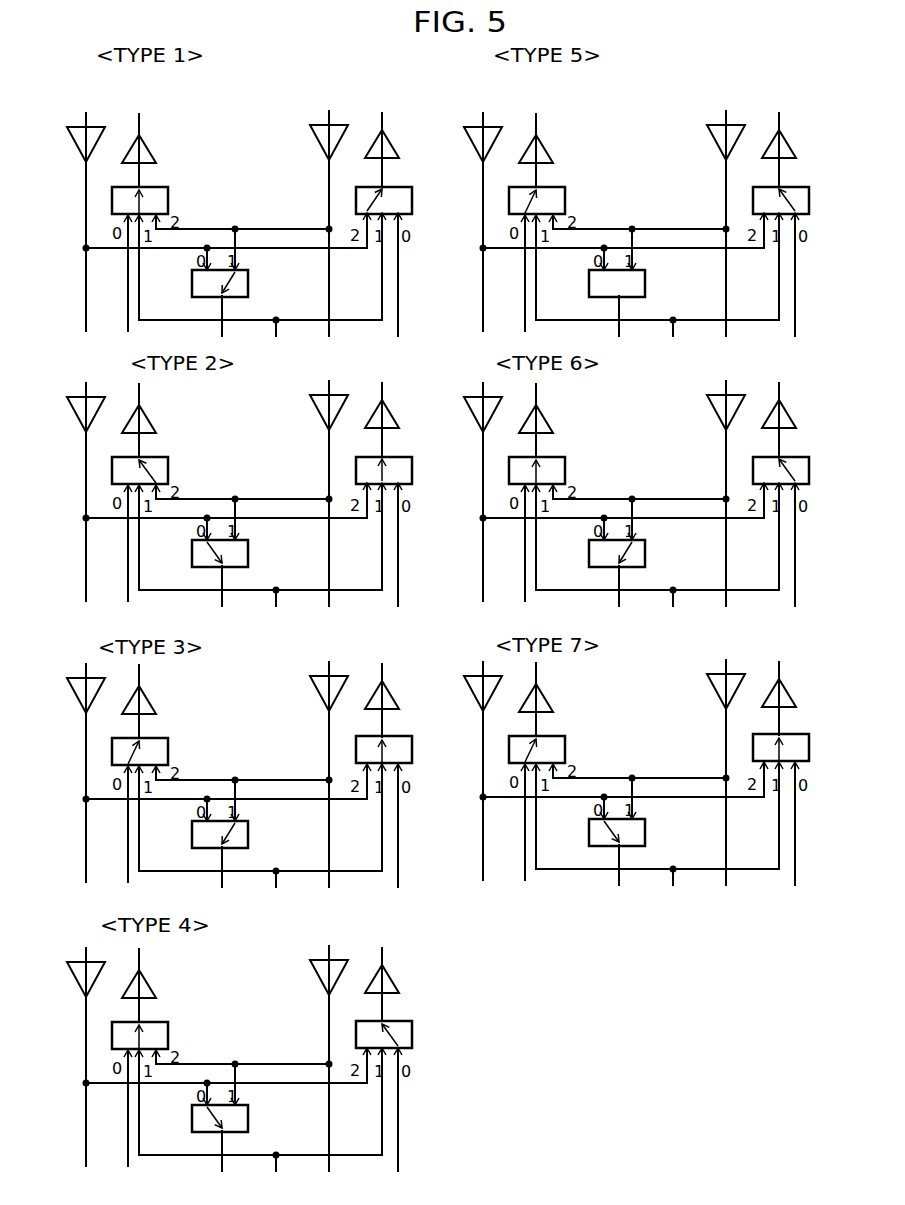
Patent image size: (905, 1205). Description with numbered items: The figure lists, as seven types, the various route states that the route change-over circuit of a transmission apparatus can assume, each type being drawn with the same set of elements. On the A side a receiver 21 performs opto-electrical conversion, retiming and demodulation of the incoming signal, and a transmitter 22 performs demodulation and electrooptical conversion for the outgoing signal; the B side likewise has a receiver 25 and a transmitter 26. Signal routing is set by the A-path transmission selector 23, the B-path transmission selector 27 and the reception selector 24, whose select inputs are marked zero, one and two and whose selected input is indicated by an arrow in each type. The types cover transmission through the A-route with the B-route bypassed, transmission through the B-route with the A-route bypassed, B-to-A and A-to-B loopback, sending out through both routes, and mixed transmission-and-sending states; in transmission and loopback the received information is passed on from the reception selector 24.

The receiver 21 is at (382, 118).
The transmitter 22 is at (550, 694).
The A-path transmission selector 23 is at (565, 746).
The reception selector 24 is at (644, 834).
The receiver 25 is at (720, 698).
The transmitter 26 is at (788, 694).
The B-path transmission selector 27 is at (786, 736).